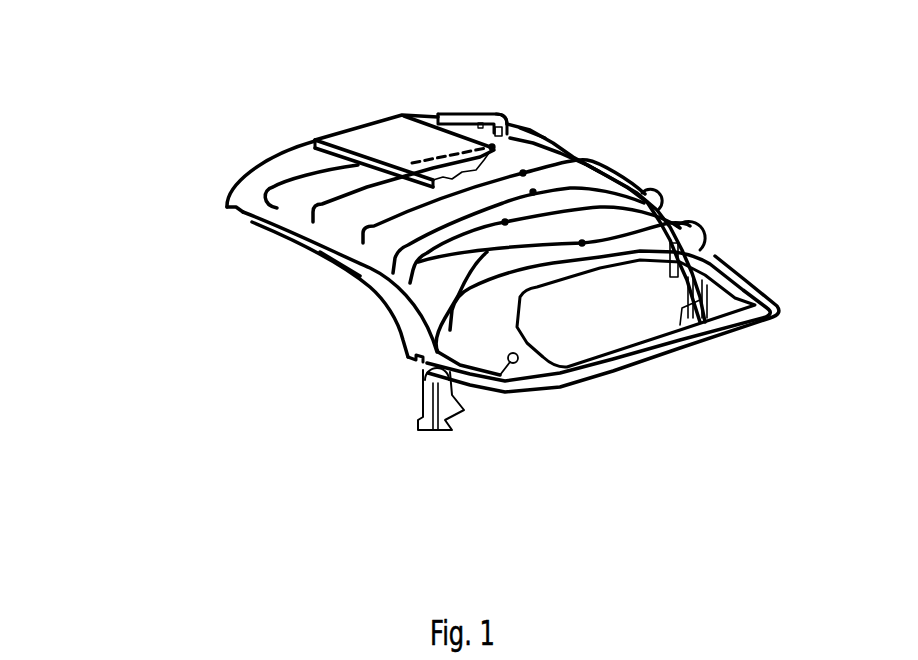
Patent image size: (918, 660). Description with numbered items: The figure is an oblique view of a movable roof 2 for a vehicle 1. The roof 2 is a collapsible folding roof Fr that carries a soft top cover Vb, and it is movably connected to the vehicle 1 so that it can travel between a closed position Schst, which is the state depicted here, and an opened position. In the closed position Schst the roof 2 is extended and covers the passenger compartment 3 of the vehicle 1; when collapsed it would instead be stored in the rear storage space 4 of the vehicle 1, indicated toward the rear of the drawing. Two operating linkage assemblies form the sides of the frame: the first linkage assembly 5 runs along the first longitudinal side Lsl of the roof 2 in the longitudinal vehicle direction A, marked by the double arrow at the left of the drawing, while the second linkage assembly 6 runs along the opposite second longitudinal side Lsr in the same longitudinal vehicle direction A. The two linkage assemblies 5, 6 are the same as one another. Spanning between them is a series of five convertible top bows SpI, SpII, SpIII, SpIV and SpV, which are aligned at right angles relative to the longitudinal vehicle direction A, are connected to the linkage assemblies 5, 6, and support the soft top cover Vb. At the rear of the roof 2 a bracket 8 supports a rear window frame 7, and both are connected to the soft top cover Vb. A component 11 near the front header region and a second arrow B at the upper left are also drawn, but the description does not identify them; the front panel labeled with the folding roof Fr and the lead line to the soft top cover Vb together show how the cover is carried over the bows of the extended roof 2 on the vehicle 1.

The vehicle 1 is at (212, 152).
The movable roof 2 is at (502, 112).
The passenger compartment 3 is at (337, 335).
The rear storage space 4 is at (758, 372).
The first operating linkage assembly 5 is at (342, 257).
The second operating linkage assembly 6 is at (533, 132).
The rear window frame 7 is at (557, 283).
The bracket 8 is at (667, 360).
The front header bracket 11 is at (440, 117).
The collapsible folding roof Fr is at (353, 125).
The soft top cover Vb is at (352, 167).
The convertible top bow SpI is at (492, 145).
The convertible top bow SpII is at (523, 173).
The convertible top bow SpIII is at (533, 192).
The convertible top bow SpIV is at (505, 222).
The convertible top bow SpV is at (582, 243).
The first longitudinal side Lsl is at (301, 242).
The second longitudinal side Lsr is at (560, 138).
The closed position Schst is at (588, 147).
The longitudinal vehicle direction A is at (8, 162).
The view direction B is at (163, 22).